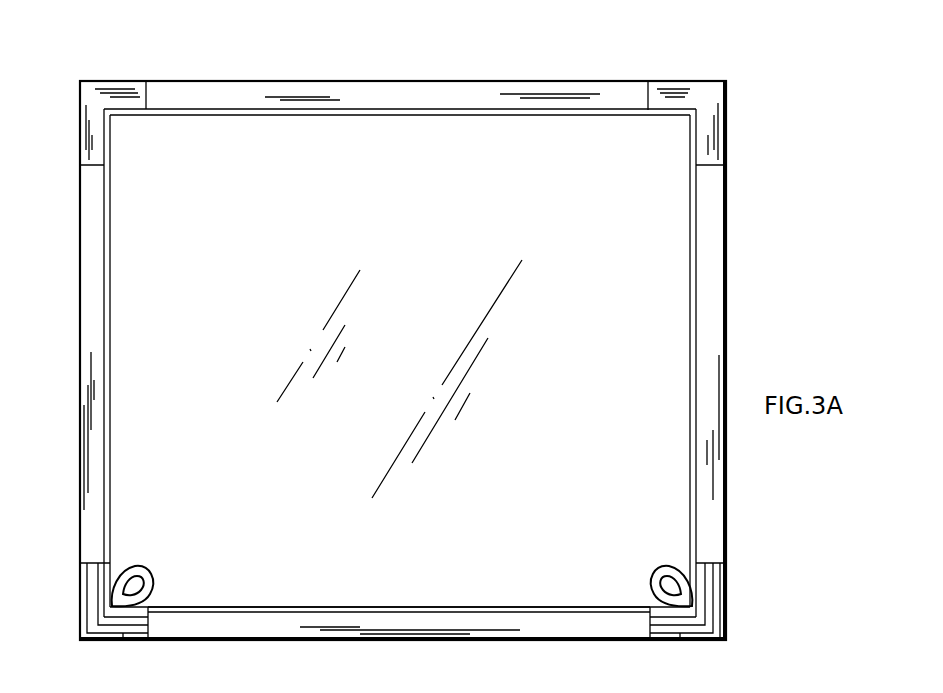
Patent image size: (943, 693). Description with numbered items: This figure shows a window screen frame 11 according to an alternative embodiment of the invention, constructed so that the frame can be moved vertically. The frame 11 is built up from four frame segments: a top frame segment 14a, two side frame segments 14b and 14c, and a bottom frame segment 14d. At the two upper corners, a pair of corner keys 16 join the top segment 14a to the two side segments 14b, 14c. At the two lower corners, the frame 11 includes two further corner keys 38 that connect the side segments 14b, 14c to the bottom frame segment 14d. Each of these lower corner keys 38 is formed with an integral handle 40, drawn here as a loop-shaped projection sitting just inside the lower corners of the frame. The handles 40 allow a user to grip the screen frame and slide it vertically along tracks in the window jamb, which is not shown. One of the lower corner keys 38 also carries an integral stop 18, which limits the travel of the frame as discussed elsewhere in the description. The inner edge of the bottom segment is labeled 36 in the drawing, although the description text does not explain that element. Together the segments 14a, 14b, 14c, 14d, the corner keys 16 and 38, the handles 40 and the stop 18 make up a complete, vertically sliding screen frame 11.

The window screen frame 11 is at (605, 54).
The top frame segment 14a is at (320, 117).
The side frame segment 14b is at (690, 306).
The side frame segment 14c is at (110, 297).
The bottom frame segment 14d is at (346, 571).
The corner key 16 is at (105, 72).
The integral stop 18 is at (93, 608).
The glazing bead 36 is at (438, 573).
The corner key 38 is at (120, 640).
The integral handle 40 is at (153, 568).